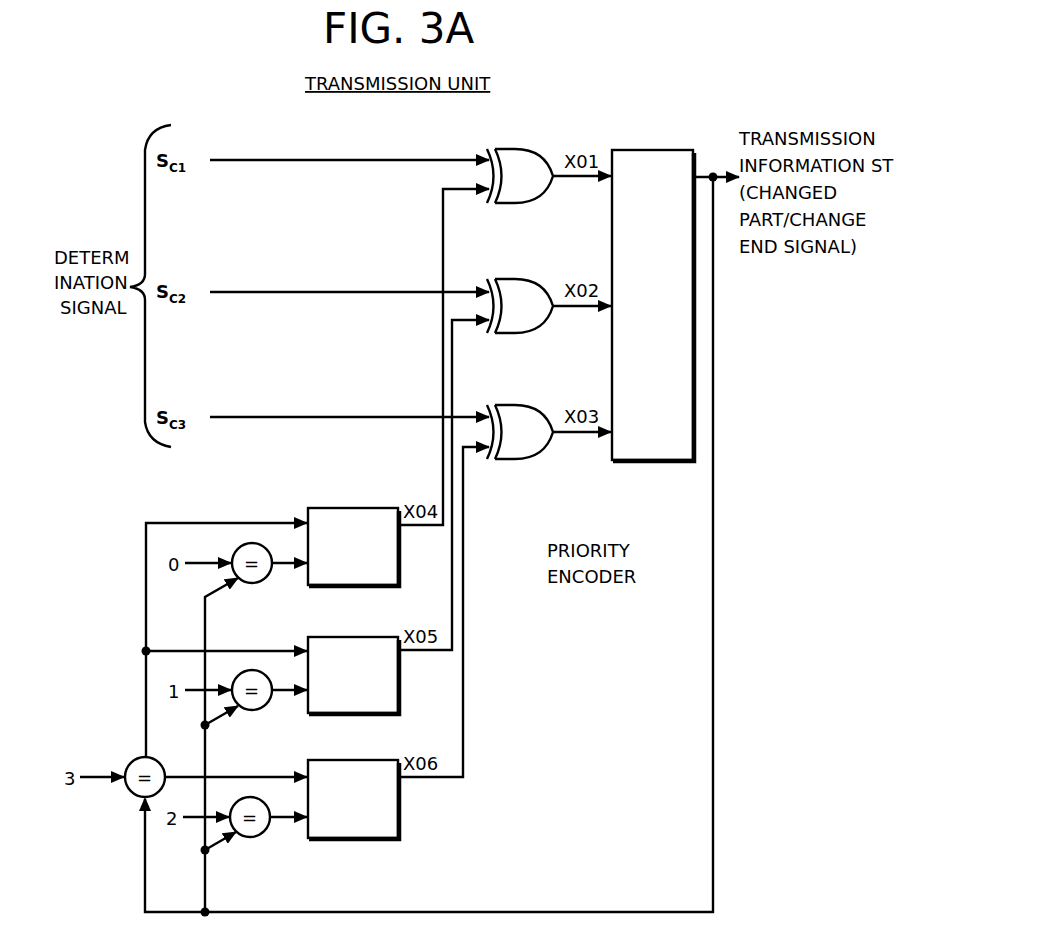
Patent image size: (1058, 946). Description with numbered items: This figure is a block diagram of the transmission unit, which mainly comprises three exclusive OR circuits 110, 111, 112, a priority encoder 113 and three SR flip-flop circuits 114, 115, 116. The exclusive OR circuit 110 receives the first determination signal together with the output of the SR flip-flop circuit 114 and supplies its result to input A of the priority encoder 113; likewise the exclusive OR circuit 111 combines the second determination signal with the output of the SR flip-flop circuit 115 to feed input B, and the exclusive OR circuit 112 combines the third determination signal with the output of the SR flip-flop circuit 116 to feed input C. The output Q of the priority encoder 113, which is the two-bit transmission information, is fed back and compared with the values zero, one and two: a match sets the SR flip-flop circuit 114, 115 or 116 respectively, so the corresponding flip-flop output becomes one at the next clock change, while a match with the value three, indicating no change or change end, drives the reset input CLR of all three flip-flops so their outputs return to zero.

The exclusive OR circuit 110 is at (512, 150).
The exclusive OR circuit 111 is at (512, 280).
The exclusive OR circuit 112 is at (512, 406).
The priority encoder 113 is at (630, 463).
The SR flip-flop circuit 114 is at (330, 508).
The SR flip-flop circuit 115 is at (322, 637).
The SR flip-flop circuit 116 is at (322, 760).